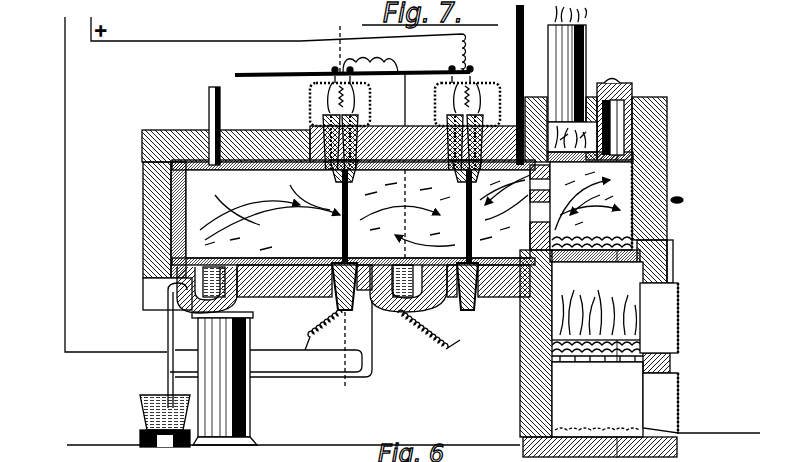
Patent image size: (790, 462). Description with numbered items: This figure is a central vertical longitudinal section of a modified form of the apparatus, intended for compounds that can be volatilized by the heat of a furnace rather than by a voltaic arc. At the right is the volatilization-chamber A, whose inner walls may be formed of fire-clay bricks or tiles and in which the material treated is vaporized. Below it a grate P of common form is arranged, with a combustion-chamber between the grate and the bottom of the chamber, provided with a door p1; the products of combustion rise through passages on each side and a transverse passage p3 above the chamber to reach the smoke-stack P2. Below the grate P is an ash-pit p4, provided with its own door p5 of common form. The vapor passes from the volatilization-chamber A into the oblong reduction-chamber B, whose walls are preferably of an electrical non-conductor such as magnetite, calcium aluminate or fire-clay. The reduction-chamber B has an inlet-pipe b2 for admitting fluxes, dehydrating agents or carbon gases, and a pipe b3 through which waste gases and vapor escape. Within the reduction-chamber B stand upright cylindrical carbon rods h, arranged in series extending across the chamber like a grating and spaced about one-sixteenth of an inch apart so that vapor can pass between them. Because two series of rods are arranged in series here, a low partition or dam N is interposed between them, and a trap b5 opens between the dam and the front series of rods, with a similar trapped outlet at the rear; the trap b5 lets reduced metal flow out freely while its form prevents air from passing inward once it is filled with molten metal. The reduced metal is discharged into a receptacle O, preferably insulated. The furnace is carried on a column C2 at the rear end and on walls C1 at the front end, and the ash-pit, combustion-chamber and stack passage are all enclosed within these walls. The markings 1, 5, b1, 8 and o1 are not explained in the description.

The battery wire 1 is at (108, 184).
The conductor 5 is at (340, 205).
The pipe for escape of waste gases and vapor b3 is at (221, 108).
The inlet-pipe b2 is at (530, 60).
The cap of tube 8 is at (612, 80).
The smoke-stack P2 is at (586, 58).
The transverse passage p3 is at (640, 125).
The reduction-chamber B is at (358, 214).
The carbon rods h is at (406, 235).
The low partition or dam N is at (407, 214).
The volatilization-chamber A is at (591, 206).
The walls C1 is at (667, 268).
The oil rod o1 is at (168, 330).
The receptacle O is at (143, 397).
The column C2 is at (248, 404).
The circuit wire b1 is at (300, 378).
The trap b5 is at (393, 313).
The door p1 is at (660, 318).
The door p5 is at (660, 400).
The grate P is at (597, 349).
The ash-pit p4 is at (597, 418).